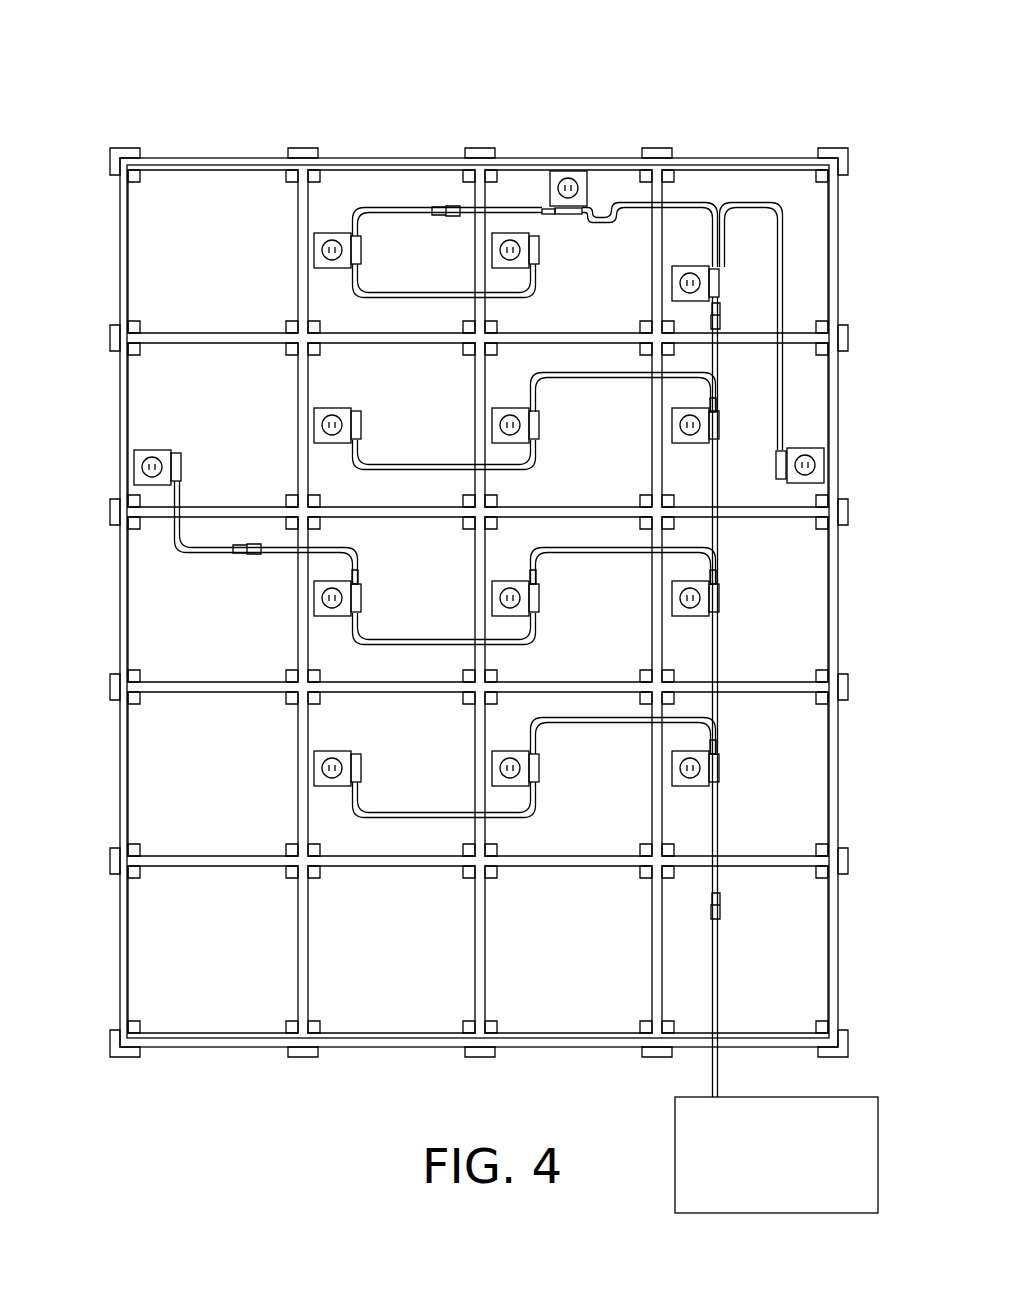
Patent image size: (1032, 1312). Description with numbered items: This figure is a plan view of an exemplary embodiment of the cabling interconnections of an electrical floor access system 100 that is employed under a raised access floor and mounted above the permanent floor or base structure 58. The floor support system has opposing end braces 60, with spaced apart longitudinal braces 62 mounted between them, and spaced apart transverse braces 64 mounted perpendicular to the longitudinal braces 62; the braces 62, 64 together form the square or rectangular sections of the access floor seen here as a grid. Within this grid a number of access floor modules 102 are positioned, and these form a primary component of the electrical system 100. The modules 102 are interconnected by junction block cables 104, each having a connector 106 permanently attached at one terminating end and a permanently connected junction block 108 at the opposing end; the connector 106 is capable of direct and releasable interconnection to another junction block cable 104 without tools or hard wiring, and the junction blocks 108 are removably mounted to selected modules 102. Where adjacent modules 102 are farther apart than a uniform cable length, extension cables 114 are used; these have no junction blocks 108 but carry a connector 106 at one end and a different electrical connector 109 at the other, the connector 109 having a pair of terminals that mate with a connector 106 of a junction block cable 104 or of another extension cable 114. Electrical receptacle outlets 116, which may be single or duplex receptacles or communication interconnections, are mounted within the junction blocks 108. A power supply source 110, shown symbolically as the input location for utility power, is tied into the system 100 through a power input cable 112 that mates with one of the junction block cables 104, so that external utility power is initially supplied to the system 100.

The electrical floor access system 100 is at (660, 112).
The end brace 60 is at (612, 157).
The longitudinal brace 62 is at (298, 298).
The transverse brace 64 is at (172, 333).
The access floor module 102 is at (600, 222).
The junction block cable 104 is at (783, 382).
The connector 106 is at (447, 205).
The junction block 108 is at (588, 188).
The electrical connector 109 is at (447, 216).
The power supply source 110 is at (675, 1160).
The power input cable 112 is at (745, 958).
The extension cable 114 is at (372, 208).
The electrical receptacle outlet 116 is at (330, 232).
The permanent floor or base structure 58 is at (217, 790).